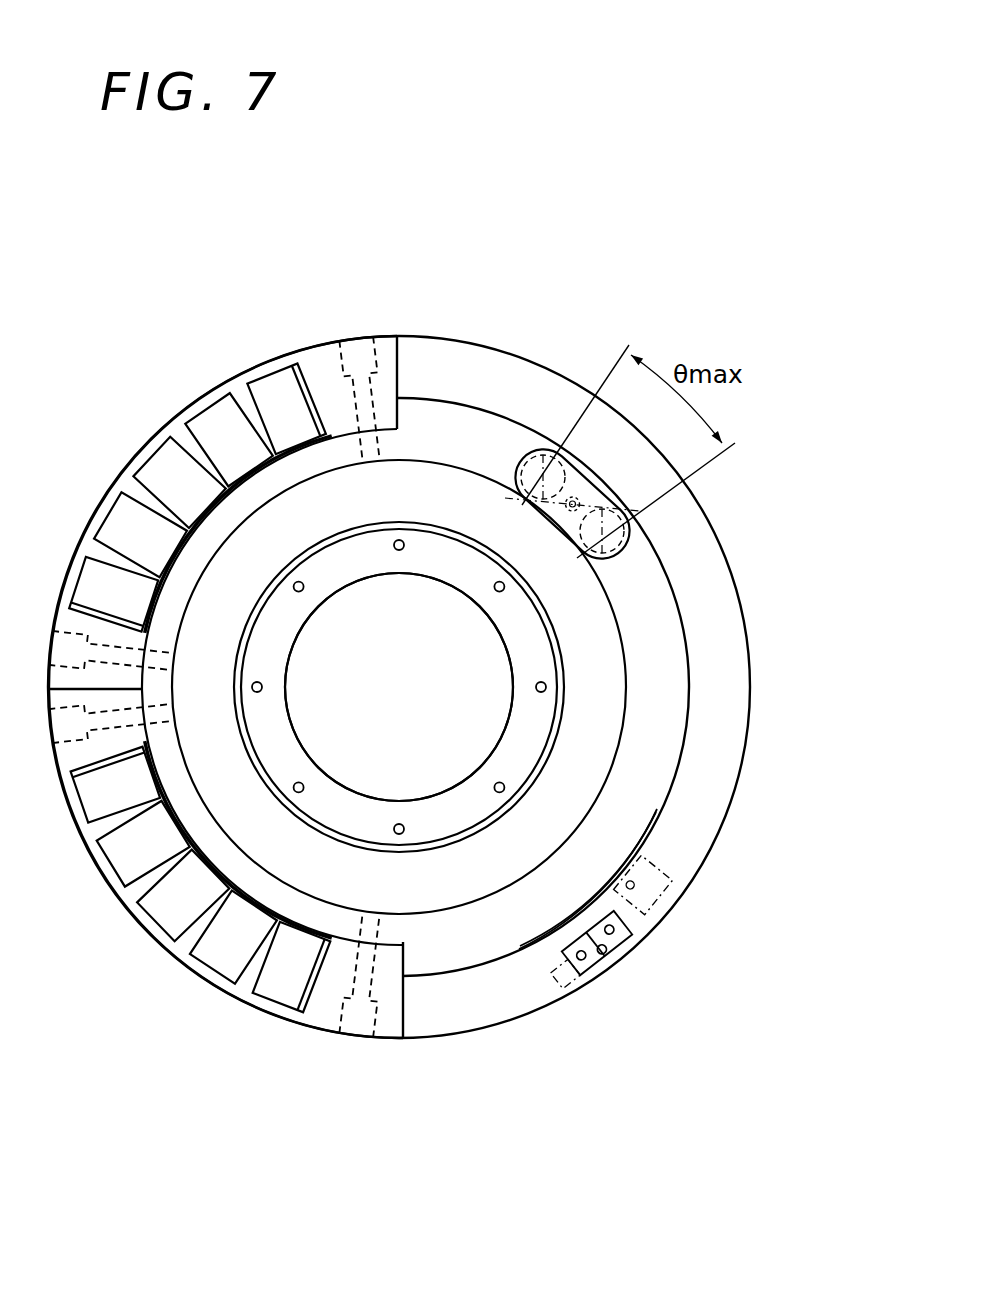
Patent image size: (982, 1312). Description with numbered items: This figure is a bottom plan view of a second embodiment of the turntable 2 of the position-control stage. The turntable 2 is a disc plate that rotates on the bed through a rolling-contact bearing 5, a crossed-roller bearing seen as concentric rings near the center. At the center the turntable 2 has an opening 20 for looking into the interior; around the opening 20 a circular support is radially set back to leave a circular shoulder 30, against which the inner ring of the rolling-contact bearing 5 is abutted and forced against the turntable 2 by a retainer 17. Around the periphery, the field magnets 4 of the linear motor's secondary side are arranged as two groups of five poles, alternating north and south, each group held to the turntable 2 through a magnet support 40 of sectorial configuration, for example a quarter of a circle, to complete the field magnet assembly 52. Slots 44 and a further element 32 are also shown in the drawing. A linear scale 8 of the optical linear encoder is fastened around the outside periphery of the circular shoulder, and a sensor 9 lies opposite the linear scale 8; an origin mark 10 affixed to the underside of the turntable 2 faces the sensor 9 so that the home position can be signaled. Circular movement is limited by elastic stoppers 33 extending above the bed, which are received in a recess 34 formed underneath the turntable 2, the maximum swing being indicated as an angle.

The turntable 2 is at (492, 1000).
The field magnets 4 is at (160, 467).
The rolling-contact bearing 5 is at (333, 540).
The linear scale 8 is at (661, 820).
The sensor 9 is at (642, 898).
The origin mark 10 is at (600, 933).
The retainer 17 is at (283, 748).
The opening 20 is at (510, 706).
The circular shoulder 30 is at (537, 605).
The bolt holes 32 is at (495, 784).
The elastic stoppers 33 is at (573, 480).
The recess 34 is at (612, 563).
The magnet support 40 is at (245, 392).
The slots 44 is at (360, 350).
The field magnet assembly 52 is at (287, 355).